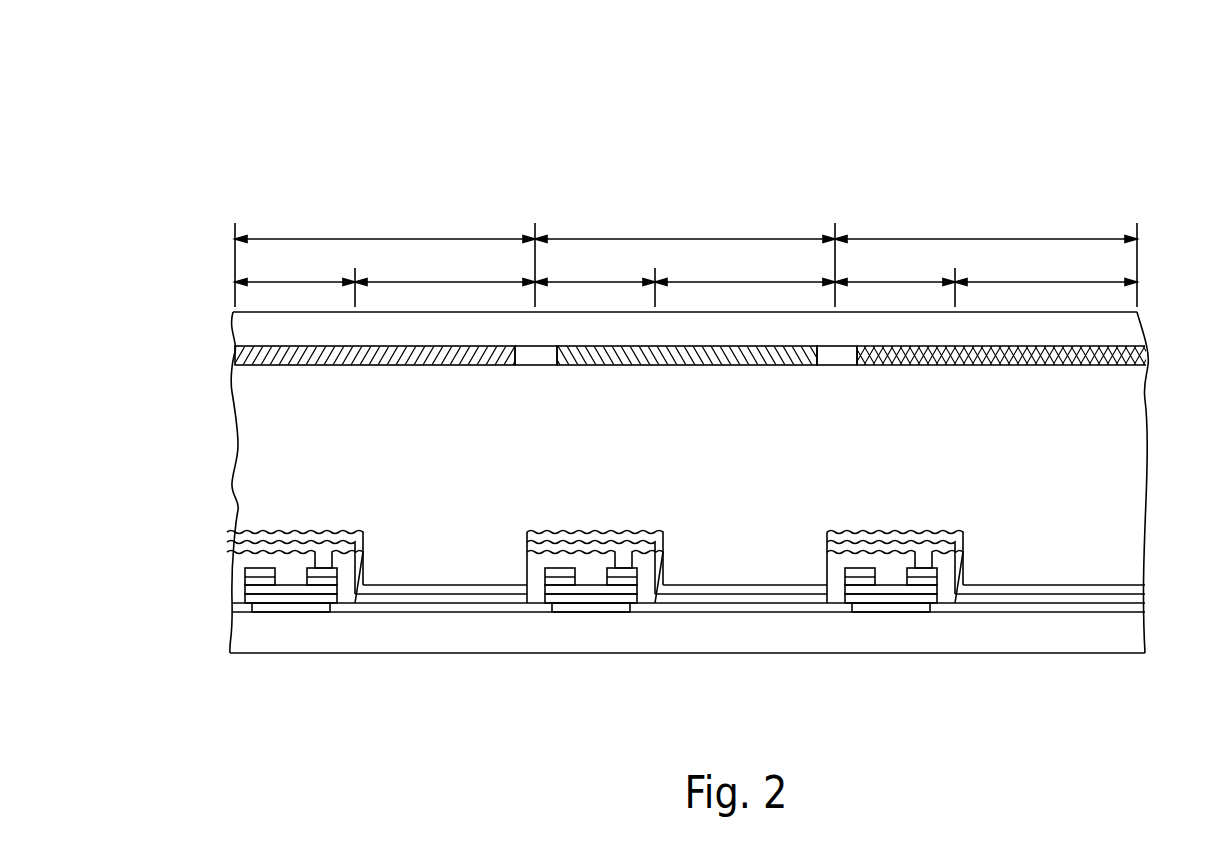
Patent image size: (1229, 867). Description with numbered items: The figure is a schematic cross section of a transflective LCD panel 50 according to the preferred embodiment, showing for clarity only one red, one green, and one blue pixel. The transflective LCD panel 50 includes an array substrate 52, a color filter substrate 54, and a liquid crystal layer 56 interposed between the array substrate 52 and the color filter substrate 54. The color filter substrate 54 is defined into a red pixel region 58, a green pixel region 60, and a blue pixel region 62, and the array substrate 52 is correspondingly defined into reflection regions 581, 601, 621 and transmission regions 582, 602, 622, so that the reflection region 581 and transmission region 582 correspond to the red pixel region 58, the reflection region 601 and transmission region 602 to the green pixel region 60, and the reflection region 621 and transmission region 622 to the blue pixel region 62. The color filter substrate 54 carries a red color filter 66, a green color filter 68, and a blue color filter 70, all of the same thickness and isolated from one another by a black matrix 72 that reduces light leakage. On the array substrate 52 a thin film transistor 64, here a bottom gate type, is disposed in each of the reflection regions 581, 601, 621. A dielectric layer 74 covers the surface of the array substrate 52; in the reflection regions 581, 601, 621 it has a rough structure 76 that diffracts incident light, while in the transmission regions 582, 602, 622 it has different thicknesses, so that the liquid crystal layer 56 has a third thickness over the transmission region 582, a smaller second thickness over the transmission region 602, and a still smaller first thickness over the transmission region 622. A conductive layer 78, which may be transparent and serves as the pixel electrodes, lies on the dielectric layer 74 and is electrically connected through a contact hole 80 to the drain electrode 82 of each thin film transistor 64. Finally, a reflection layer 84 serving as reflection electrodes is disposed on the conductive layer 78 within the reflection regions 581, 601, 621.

The transflective LCD panel 50 is at (1098, 140).
The array substrate 52 is at (663, 641).
The color filter substrate 54 is at (663, 342).
The liquid crystal layer 56 is at (232, 483).
The red pixel region 58 is at (385, 257).
The reflection region 581 is at (295, 279).
The transmission region 582 is at (445, 268).
The green pixel region 60 is at (685, 257).
The reflection region 601 is at (595, 279).
The transmission region 602 is at (745, 268).
The blue pixel region 62 is at (986, 257).
The reflection region 621 is at (895, 279).
The transmission region 622 is at (1046, 268).
The thin film transistor 64 is at (297, 616).
The red color filter 66 is at (365, 352).
The green color filter 68 is at (663, 352).
The blue color filter 70 is at (960, 352).
The black matrix 72 is at (530, 356).
The dielectric layer 74 is at (233, 567).
The rough structure 76 is at (280, 550).
The conductive layer 78 is at (233, 557).
The contact hole 80 is at (322, 562).
The drain electrode 82 is at (332, 576).
The reflection layer 84 is at (237, 533).